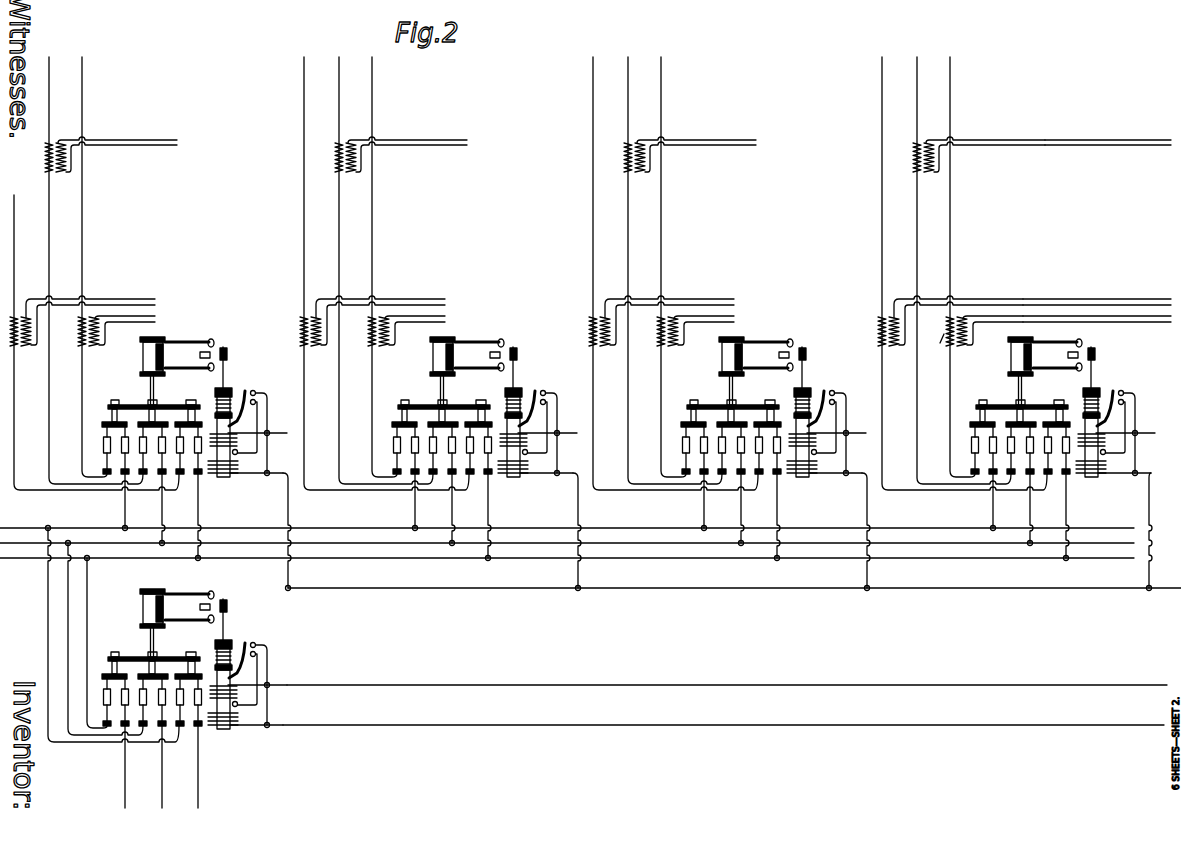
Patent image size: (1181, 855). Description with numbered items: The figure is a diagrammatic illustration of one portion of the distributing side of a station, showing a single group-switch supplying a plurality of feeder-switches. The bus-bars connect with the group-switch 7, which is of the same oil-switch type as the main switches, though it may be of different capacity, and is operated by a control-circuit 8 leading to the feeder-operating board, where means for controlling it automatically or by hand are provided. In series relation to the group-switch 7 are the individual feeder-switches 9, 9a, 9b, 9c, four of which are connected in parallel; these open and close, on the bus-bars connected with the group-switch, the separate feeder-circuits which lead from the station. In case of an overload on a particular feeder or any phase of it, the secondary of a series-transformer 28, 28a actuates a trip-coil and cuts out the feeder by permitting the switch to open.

The group-switch 7 is at (167, 667).
The control-circuit 8 is at (725, 690).
The feeder-switch 9 is at (150, 322).
The feeder-switch 9a is at (440, 322).
The feeder-switch 9b is at (729, 322).
The feeder-switch 9c is at (1026, 322).
The series-transformer 28 is at (880, 332).
The series-transformer 28a is at (73, 340).